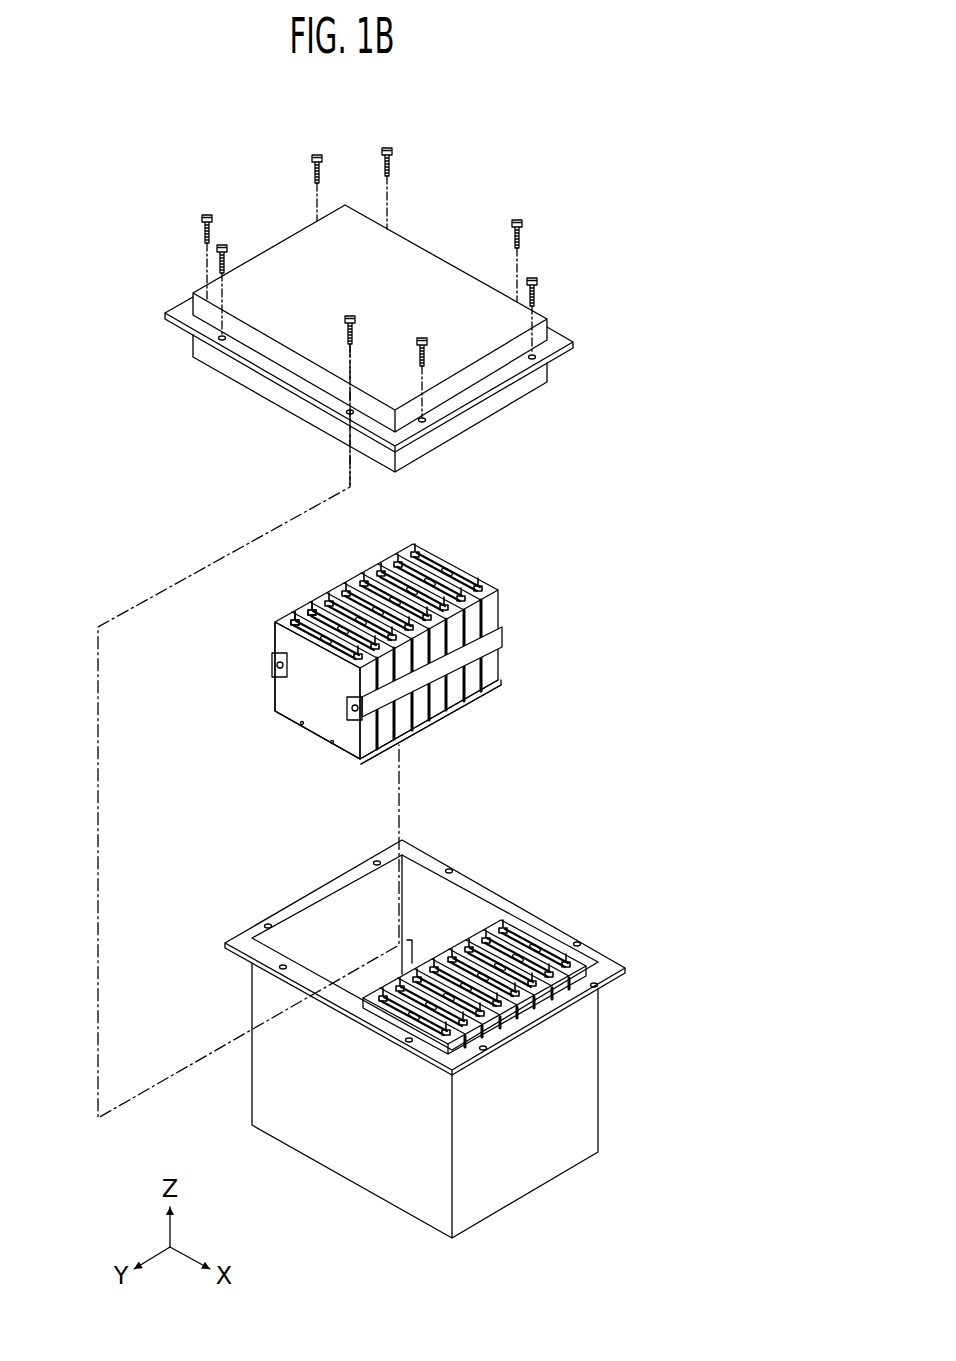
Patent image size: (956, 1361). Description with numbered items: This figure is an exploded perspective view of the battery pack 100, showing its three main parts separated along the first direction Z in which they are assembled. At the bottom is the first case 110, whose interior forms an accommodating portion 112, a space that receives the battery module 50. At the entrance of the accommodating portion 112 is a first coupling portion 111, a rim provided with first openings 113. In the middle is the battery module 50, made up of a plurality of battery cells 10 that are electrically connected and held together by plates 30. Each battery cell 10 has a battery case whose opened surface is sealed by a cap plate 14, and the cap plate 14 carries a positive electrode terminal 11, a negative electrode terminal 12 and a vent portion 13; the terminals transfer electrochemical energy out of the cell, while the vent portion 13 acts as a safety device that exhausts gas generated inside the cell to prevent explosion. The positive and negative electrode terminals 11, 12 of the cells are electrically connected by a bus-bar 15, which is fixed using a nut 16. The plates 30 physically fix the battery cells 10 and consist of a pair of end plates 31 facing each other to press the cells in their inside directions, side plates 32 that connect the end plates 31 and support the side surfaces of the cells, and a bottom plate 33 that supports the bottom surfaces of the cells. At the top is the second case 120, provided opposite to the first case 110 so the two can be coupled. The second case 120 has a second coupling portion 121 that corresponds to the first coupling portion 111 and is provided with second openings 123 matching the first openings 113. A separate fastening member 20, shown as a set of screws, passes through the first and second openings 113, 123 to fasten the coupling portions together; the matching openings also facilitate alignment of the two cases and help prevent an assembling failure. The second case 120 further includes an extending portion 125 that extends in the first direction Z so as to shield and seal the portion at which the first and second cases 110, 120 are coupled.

The battery pack 100 is at (345, 152).
The fastening member 20 is at (517, 219).
The second case 120 is at (300, 256).
The second coupling portion 121 is at (185, 311).
The extending portion 125 is at (258, 382).
The second openings 123 is at (425, 418).
The battery module 50 is at (497, 505).
The battery cell 10 is at (497, 604).
The positive electrode terminal 11 is at (416, 546).
The negative electrode terminal 12 is at (482, 578).
The vent portion 13 is at (447, 562).
The cap plate 14 is at (433, 557).
The bus-bar 15 is at (300, 607).
The nut 16 is at (289, 612).
The plates 30 is at (391, 713).
The end plates 31 is at (282, 696).
The side plates 32 is at (266, 665).
The bottom plate 33 is at (388, 742).
The first case 110 is at (552, 911).
The first coupling portion 111 is at (608, 978).
The accommodating portion 112 is at (333, 940).
The first openings 113 is at (486, 1048).